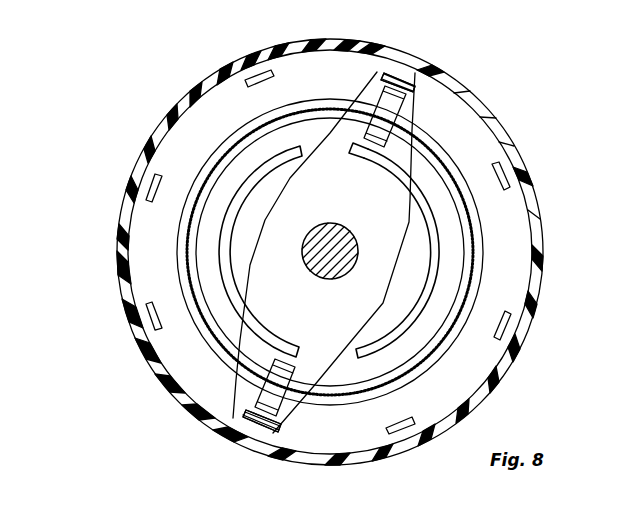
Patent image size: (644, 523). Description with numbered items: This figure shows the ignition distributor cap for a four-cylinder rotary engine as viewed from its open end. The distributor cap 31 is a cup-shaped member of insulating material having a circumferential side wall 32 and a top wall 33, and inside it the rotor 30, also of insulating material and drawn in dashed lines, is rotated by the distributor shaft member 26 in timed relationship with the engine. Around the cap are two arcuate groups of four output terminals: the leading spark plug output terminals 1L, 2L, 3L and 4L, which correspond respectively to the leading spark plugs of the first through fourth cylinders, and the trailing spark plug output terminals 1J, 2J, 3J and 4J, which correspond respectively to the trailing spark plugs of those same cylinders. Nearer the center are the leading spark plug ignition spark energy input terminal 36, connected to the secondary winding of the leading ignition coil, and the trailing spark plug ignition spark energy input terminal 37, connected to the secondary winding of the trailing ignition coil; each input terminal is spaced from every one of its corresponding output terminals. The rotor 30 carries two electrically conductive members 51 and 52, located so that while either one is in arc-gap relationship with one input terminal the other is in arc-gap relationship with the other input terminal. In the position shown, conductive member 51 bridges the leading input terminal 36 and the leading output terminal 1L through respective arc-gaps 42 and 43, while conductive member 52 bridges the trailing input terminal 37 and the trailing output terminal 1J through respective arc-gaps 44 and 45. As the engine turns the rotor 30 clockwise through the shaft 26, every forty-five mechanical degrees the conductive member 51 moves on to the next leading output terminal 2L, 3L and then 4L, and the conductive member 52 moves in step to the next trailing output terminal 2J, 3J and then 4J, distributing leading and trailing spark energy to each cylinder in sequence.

The distributor shaft member 26 is at (305, 268).
The rotor 30 is at (407, 152).
The distributor cap 31 is at (170, 107).
The circumferential side wall 32 is at (125, 218).
The top wall 33 is at (228, 100).
The leading spark plug ignition spark energy input terminal 36 is at (437, 267).
The trailing spark plug ignition spark energy input terminal 37 is at (230, 215).
The arc-gap 42 is at (342, 142).
The arc-gap 43 is at (381, 76).
The arc-gap 44 is at (300, 357).
The arc-gap 45 is at (282, 432).
The electrically conductive member 51 is at (408, 105).
The electrically conductive member 52 is at (255, 393).
The trailing spark plug output terminal 1J is at (238, 428).
The trailing spark plug output terminal 2J is at (152, 325).
The trailing spark plug output terminal 3J is at (152, 182).
The trailing spark plug output terminal 4J is at (257, 72).
The leading spark plug output terminal 1L is at (413, 72).
The leading spark plug output terminal 2L is at (506, 178).
The leading spark plug output terminal 3L is at (503, 328).
The leading spark plug output terminal 4L is at (404, 432).